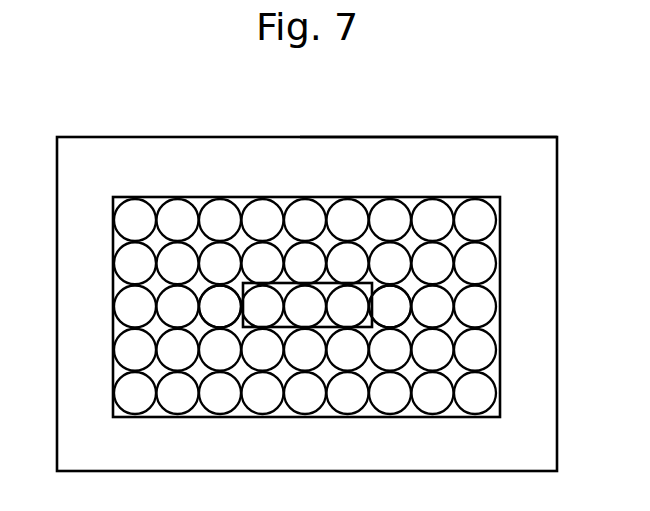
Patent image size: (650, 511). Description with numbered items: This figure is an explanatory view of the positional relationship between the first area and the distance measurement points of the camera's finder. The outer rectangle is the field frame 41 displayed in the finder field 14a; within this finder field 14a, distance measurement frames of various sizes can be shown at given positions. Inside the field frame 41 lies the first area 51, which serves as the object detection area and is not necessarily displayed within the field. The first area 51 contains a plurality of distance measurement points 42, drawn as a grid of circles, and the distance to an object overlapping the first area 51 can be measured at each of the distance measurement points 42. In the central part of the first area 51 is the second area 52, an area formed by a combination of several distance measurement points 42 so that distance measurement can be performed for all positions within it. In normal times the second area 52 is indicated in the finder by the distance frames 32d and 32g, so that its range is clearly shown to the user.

The field frame 41 is at (82, 145).
The finder field 14a is at (478, 137).
The first area 51 is at (198, 197).
The second area 52 is at (340, 283).
The distance measurement points 42 is at (438, 212).
The distance frame 32d is at (228, 335).
The distance frame 32g is at (385, 335).